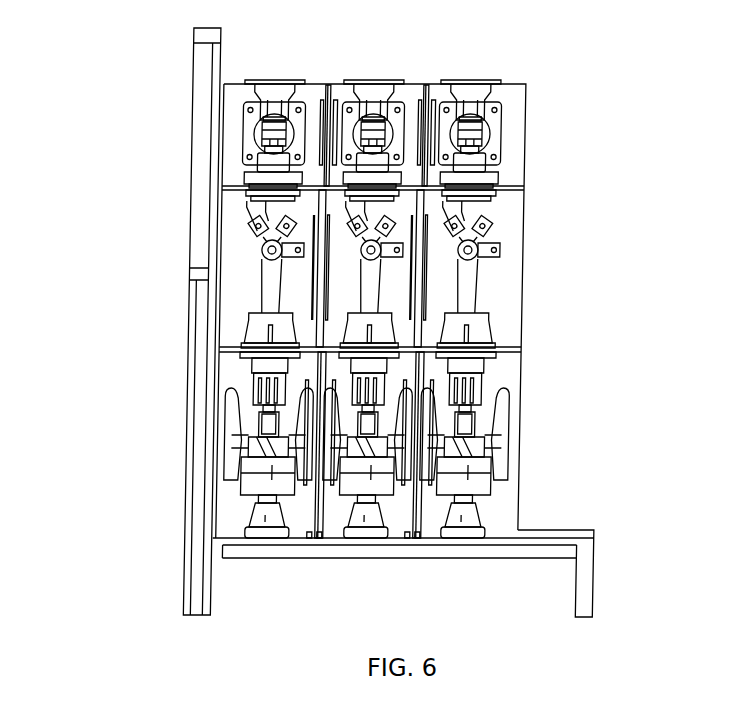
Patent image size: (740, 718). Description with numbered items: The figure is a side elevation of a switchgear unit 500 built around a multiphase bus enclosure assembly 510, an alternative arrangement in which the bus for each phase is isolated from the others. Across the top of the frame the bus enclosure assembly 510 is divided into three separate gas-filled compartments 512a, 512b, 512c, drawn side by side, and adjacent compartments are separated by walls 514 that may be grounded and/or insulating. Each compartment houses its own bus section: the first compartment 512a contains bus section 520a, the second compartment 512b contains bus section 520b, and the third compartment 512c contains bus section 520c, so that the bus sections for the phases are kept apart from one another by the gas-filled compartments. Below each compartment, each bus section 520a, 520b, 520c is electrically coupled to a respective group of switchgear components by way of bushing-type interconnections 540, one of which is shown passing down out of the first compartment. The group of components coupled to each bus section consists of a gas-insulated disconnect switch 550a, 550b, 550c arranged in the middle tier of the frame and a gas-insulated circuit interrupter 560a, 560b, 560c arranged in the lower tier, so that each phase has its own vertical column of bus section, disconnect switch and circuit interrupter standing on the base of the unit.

The switchgear unit 500 is at (163, 468).
The multiphase bus enclosure assembly 510 is at (525, 93).
The gas-filled compartment 512a is at (231, 92).
The gas-filled compartment 512b is at (412, 100).
The gas-filled compartment 512c is at (507, 127).
The wall 514 is at (407, 90).
The bus section 520a is at (256, 122).
The bus section 520b is at (393, 135).
The bus section 520c is at (490, 137).
The bushing-type interconnection 540 is at (246, 157).
The gas-insulated disconnect switch 550a is at (256, 232).
The gas-insulated disconnect switch 550b is at (384, 253).
The gas-insulated disconnect switch 550c is at (505, 248).
The gas-insulated circuit interrupter 560a is at (268, 467).
The gas-insulated circuit interrupter 560b is at (386, 472).
The gas-insulated circuit interrupter 560c is at (474, 384).